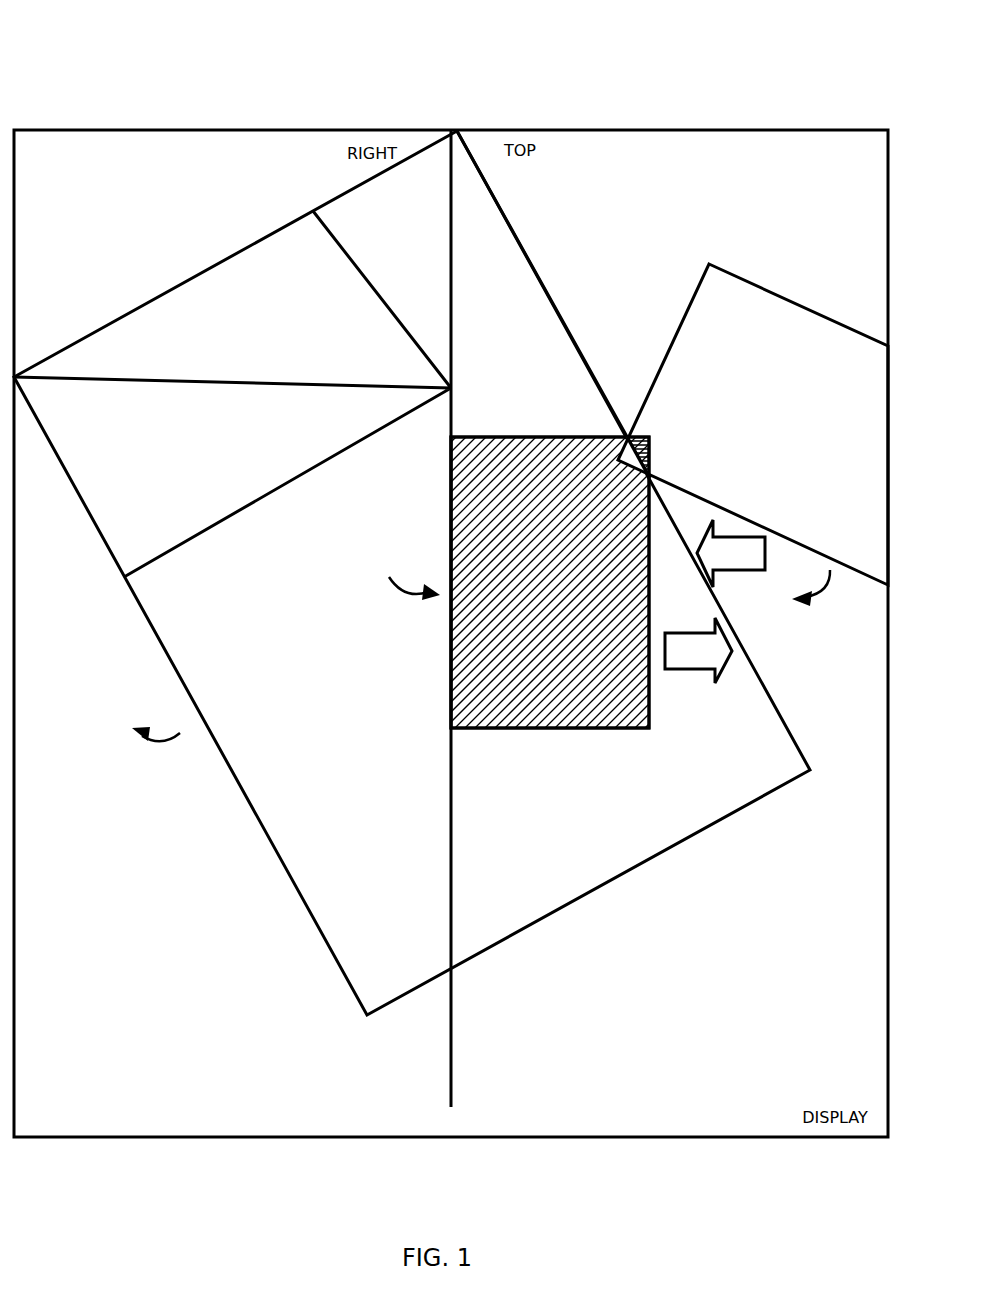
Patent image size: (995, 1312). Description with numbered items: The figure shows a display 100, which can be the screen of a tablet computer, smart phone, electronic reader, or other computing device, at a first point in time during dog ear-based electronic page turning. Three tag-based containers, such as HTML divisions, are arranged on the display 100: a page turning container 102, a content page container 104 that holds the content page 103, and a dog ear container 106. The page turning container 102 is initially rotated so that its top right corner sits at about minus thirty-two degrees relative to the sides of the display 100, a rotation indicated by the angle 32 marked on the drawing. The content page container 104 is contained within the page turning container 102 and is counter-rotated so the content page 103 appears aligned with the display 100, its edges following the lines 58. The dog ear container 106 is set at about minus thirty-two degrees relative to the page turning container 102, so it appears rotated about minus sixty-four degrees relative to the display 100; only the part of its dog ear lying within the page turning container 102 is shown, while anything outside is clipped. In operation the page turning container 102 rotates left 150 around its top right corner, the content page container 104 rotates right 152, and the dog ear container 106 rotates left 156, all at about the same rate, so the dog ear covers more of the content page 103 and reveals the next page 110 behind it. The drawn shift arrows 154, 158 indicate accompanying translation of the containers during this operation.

The display 100 is at (133, 26).
The page turning container 102 is at (346, 986).
The side panels / page edges 32 is at (332, 354).
The fold line / spine axis 58 is at (487, 618).
The content page 103 is at (578, 700).
The content page container 104 is at (451, 678).
The dog ear container 106 is at (508, 387).
The next page 110 is at (642, 433).
The rotating left 150 is at (112, 685).
The rotating right 152 is at (398, 532).
The shift operation 154 is at (698, 678).
The rotating left 156 is at (833, 635).
The shift operation 158 is at (765, 571).